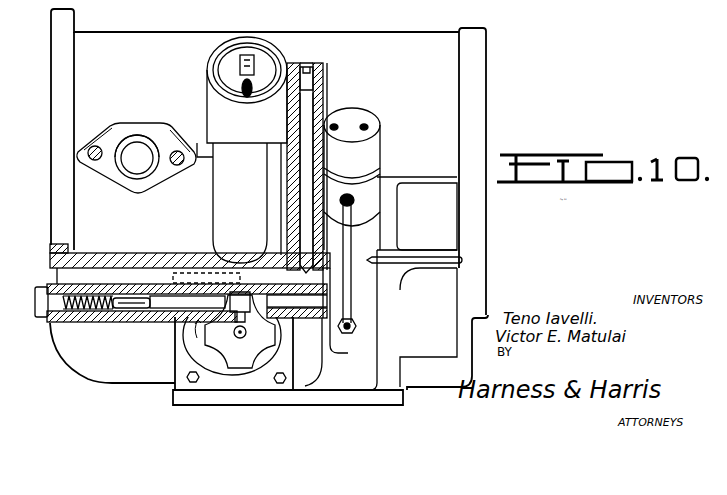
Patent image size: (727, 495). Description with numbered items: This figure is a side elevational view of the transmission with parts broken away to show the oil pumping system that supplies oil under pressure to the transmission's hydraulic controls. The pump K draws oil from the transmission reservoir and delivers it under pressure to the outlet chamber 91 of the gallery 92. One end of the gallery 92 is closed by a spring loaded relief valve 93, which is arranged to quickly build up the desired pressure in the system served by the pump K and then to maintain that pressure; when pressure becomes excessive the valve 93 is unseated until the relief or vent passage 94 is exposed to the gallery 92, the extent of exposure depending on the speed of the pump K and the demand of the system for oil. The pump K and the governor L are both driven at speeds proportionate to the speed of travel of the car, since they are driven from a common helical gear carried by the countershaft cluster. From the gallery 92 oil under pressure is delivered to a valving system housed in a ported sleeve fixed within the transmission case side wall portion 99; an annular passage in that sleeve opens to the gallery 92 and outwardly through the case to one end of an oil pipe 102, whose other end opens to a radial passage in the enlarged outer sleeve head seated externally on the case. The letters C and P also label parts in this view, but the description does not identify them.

The carburetor body C is at (387, 45).
The governor L is at (198, 107).
The accelerating pump piston P is at (373, 135).
The oil pipe 102 is at (348, 240).
The transmission case side wall portion 99 is at (362, 310).
The gallery 92 is at (340, 338).
The outlet chamber 91 is at (232, 300).
The spring loaded relief valve 93 is at (137, 326).
The relief or vent passage 94 is at (125, 325).
The pump K is at (227, 352).